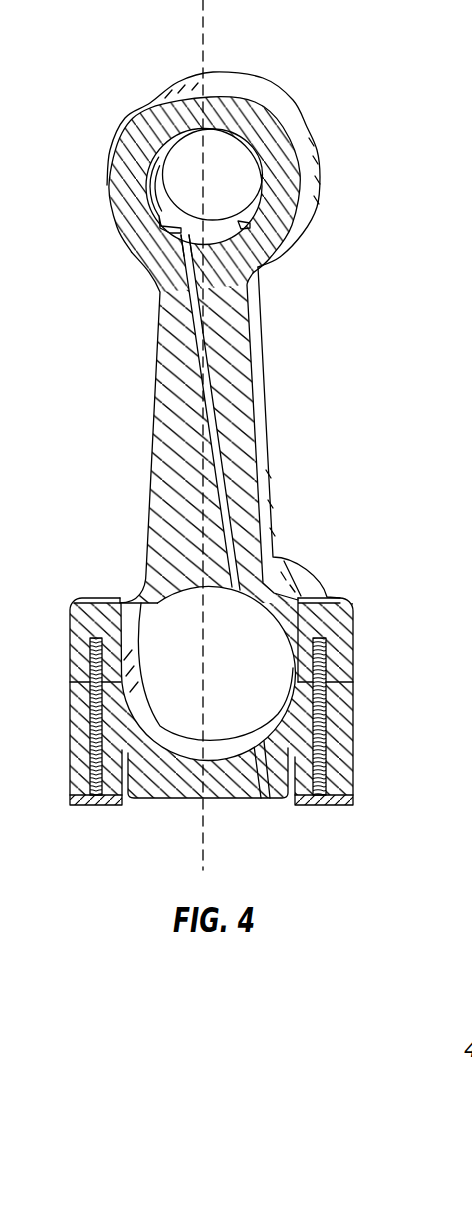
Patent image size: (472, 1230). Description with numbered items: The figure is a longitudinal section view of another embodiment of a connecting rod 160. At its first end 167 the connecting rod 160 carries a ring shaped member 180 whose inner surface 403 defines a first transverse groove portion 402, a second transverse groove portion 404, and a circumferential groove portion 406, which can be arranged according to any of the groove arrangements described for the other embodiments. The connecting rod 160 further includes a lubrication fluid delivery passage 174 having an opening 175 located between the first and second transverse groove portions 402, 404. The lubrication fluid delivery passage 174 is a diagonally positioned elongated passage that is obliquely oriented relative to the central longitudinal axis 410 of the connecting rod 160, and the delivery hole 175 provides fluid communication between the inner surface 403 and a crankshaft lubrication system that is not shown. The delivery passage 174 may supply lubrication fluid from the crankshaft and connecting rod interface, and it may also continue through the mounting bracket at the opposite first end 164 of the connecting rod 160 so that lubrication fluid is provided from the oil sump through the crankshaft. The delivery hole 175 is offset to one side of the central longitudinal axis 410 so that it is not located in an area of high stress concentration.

The connecting rod 160 is at (332, 43).
The first end 167 is at (138, 63).
The ring shaped member 180 is at (110, 173).
The inner surface 403 is at (212, 230).
The second transverse groove portion 404 is at (241, 218).
The circumferential groove portion 406 is at (147, 193).
The first transverse groove portion 402 is at (163, 220).
The opening 175 is at (155, 240).
The lubrication fluid delivery passage 174 is at (212, 397).
The first end 164 is at (167, 813).
The central longitudinal axis 410 is at (205, 42).